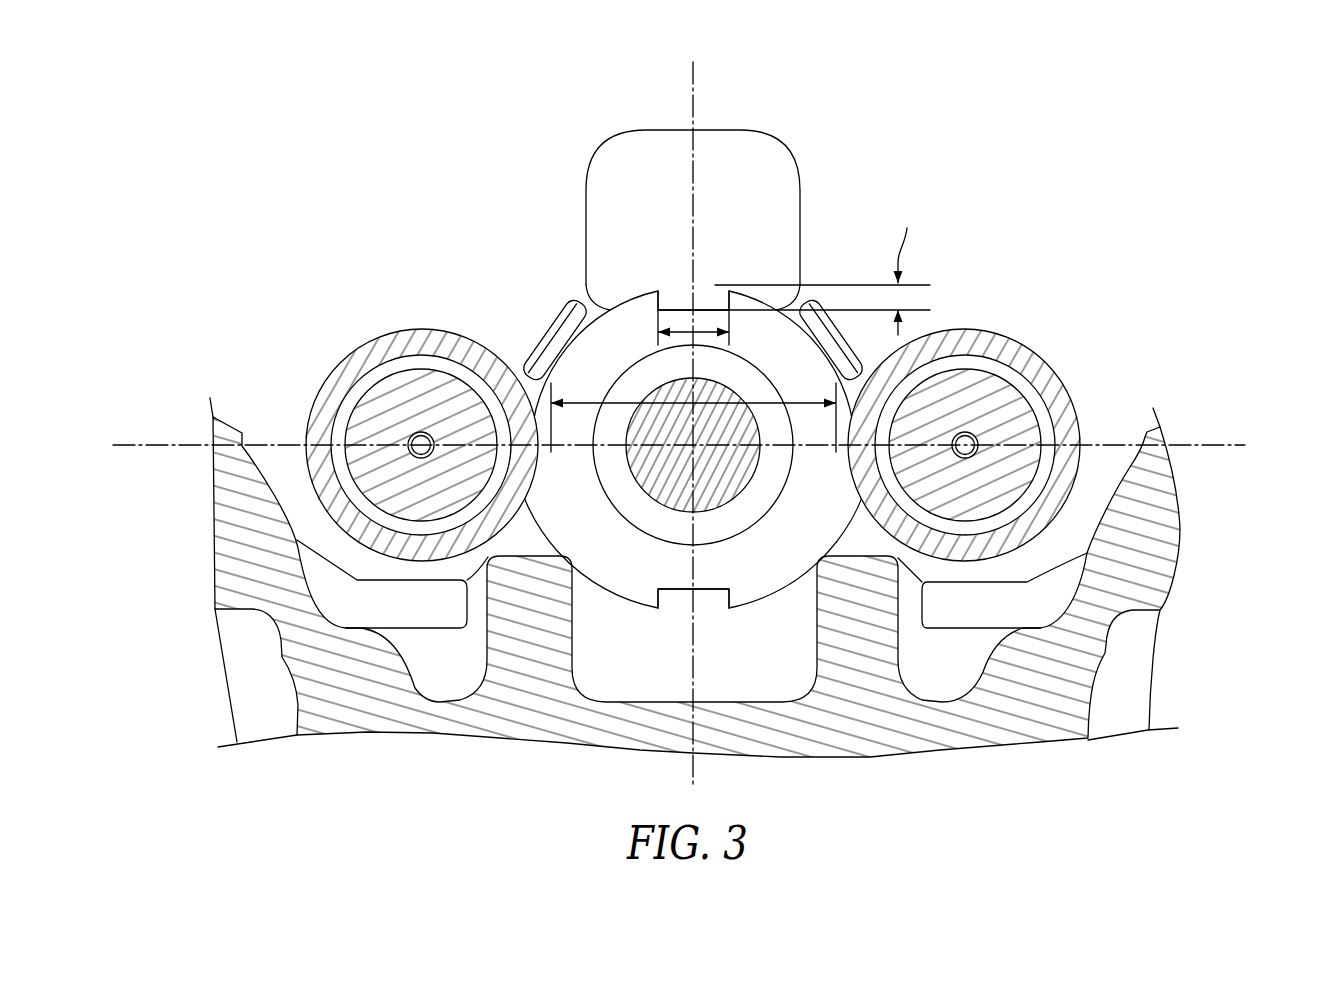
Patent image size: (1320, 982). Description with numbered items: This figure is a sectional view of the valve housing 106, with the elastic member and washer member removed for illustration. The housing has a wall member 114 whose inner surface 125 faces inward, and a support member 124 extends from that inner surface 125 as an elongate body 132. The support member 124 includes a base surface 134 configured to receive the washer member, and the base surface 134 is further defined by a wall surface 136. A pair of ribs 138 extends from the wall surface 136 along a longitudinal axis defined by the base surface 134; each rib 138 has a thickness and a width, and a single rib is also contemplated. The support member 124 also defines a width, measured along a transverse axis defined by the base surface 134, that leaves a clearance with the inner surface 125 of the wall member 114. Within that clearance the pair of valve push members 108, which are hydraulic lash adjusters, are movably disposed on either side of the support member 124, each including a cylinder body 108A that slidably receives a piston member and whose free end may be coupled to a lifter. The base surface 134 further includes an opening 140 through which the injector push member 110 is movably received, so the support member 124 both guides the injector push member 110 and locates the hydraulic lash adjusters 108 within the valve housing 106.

The valve housing 106 is at (1190, 139).
The valve push members 108 is at (693, 403).
The cylinder body 108A is at (426, 323).
The injector push member 110 is at (736, 476).
The wall member 114 is at (882, 713).
The support member 124 is at (645, 207).
The inner surface 125 is at (320, 553).
The elongate body 132 is at (765, 190).
The base surface 134 is at (583, 287).
The wall surface 136 is at (677, 445).
The ribs 138 is at (677, 306).
The opening 140 is at (750, 522).